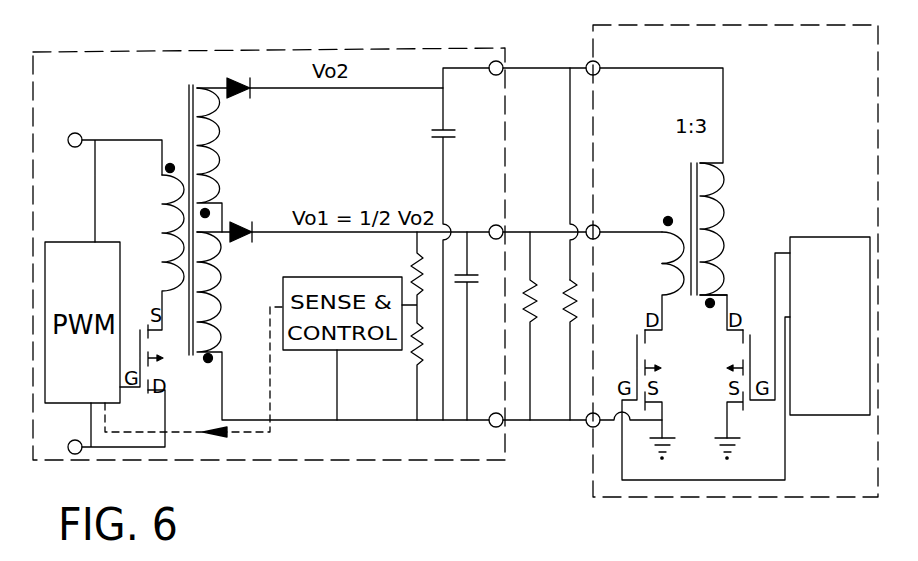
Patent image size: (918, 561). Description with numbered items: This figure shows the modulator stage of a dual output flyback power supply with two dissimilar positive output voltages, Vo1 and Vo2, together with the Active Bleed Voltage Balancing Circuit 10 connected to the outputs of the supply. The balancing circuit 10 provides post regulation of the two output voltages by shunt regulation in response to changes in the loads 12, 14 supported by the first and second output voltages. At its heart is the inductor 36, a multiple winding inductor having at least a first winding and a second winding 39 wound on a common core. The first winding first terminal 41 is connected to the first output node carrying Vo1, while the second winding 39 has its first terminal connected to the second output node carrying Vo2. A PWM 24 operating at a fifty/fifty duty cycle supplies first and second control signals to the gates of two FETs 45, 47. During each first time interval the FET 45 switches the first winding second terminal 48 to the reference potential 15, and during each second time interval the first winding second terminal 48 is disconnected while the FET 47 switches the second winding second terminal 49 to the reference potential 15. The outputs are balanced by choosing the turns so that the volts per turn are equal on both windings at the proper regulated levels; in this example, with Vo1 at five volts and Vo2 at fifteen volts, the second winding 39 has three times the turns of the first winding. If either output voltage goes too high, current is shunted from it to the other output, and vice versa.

The Active Bleed Voltage Balancing Circuit 10 is at (826, 60).
The load 12 is at (529, 285).
The load 14 is at (572, 330).
The reference potential 15 is at (494, 426).
The PWM 24 is at (842, 276).
The inductor 36 is at (703, 232).
The second winding 39 is at (710, 228).
The first winding first terminal 41 is at (658, 227).
The FET 45 is at (653, 353).
The FET 47 is at (733, 353).
The first winding second terminal 48 is at (666, 296).
The second winding second terminal 49 is at (727, 298).